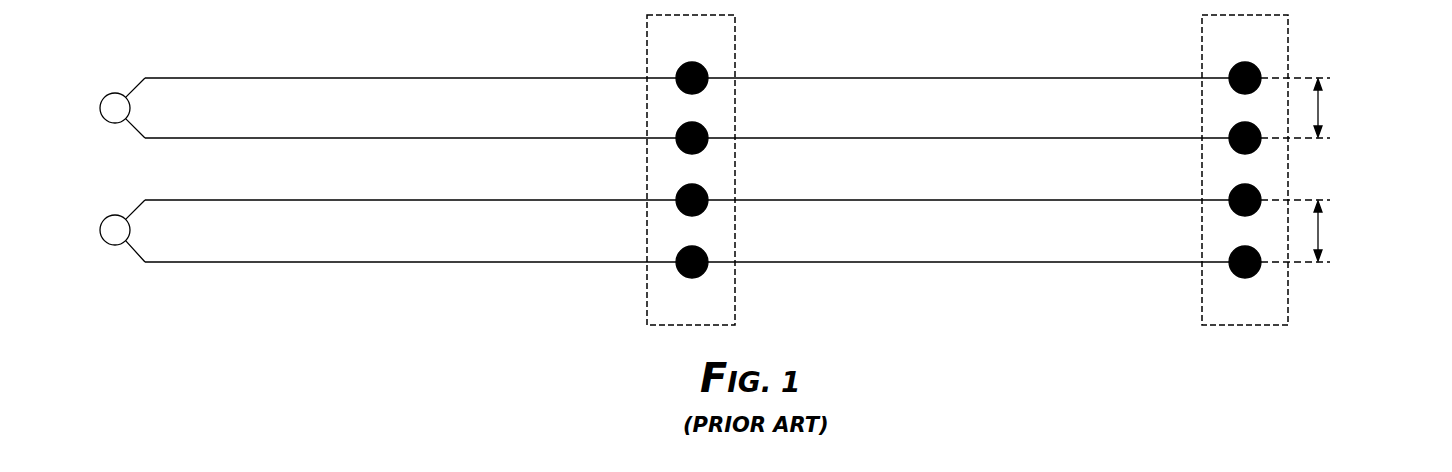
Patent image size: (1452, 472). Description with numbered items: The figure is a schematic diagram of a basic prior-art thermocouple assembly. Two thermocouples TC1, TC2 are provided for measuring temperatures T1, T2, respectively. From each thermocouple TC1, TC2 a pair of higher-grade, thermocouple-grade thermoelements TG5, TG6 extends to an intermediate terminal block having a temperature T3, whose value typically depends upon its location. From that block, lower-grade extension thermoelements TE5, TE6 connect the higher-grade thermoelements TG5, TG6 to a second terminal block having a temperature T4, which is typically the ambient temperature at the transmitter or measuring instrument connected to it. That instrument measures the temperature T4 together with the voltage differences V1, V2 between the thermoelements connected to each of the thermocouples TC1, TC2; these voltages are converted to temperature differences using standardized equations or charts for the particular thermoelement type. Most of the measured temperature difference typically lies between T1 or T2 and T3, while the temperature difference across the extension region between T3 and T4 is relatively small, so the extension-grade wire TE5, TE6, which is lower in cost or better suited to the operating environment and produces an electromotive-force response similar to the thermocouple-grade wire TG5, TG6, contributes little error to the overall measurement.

The temperature T1 is at (105, 95).
The temperature T2 is at (105, 217).
The thermocouple TC1 is at (157, 108).
The thermocouple TC2 is at (157, 231).
The higher-grade thermoelement TG5 is at (303, 78).
The higher-grade thermoelement TG6 is at (303, 138).
The lower-grade extension thermoelement TE5 is at (928, 78).
The lower-grade extension thermoelement TE6 is at (928, 138).
The terminal block temperature T3 is at (691, 170).
The terminal block temperature T4 is at (1266, 170).
The voltage difference V1 is at (1380, 108).
The voltage difference V2 is at (1380, 231).